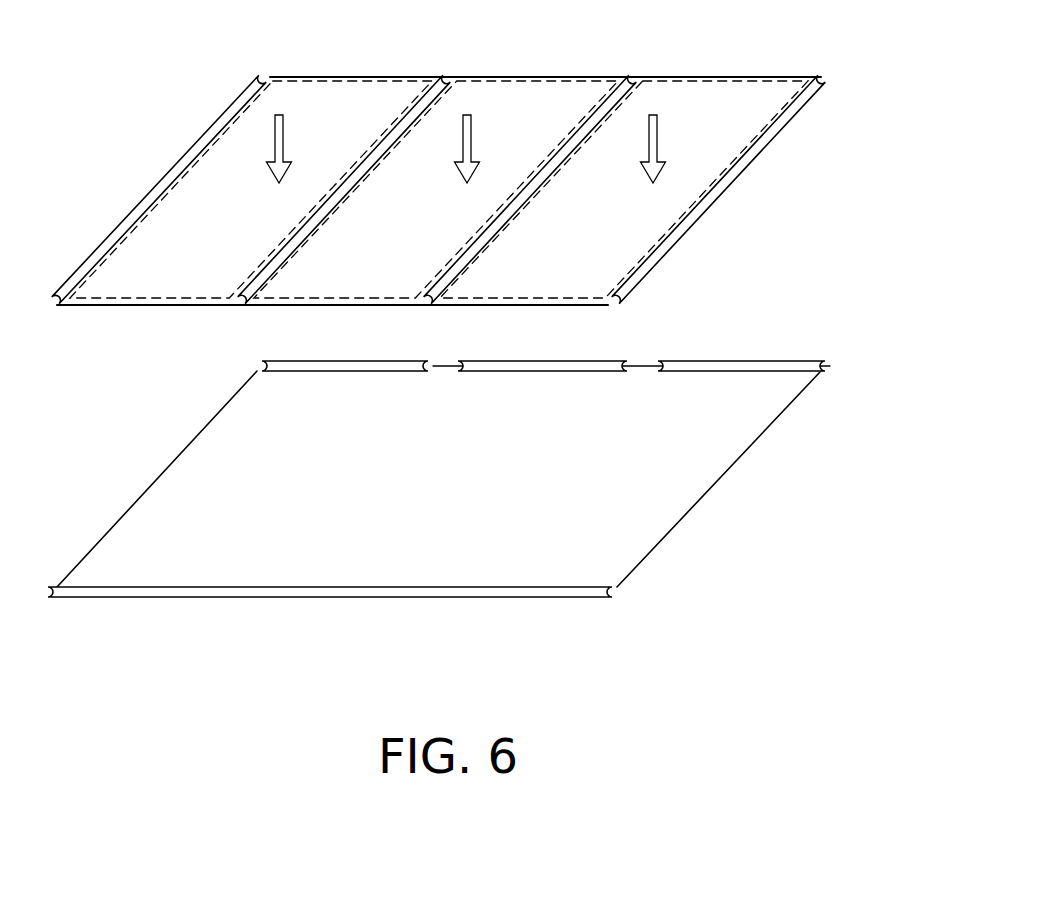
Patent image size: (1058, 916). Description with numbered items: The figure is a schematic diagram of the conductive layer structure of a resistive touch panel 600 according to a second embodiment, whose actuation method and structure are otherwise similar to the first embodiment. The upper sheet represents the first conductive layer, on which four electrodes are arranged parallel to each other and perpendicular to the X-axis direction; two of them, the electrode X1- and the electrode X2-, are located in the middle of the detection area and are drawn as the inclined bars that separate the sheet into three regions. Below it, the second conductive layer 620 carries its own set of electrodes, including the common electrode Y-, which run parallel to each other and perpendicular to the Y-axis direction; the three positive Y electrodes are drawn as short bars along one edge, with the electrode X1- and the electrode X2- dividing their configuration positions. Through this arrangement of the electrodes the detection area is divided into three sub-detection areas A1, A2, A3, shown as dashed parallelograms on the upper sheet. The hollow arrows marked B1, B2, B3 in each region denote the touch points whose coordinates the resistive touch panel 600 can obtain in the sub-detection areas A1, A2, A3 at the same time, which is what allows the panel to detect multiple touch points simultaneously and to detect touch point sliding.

The resistive touch panel 600 is at (477, 340).
The second conductive layer 620 is at (663, 485).
The electrode X1− X1- is at (457, 73).
The electrode X2− X2- is at (641, 73).
The sub-detection area A1 is at (365, 77).
The sub-detection area A2 is at (552, 77).
The sub-detection area A3 is at (737, 77).
The touch point B1 is at (288, 147).
The touch point B2 is at (477, 147).
The touch point B3 is at (664, 147).
The electrode Y− Y- is at (327, 590).